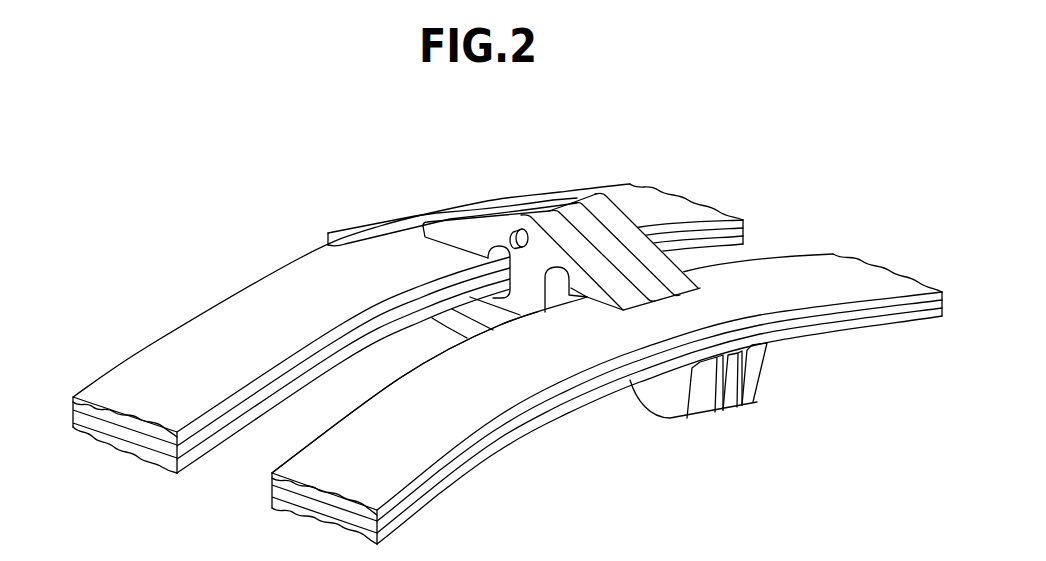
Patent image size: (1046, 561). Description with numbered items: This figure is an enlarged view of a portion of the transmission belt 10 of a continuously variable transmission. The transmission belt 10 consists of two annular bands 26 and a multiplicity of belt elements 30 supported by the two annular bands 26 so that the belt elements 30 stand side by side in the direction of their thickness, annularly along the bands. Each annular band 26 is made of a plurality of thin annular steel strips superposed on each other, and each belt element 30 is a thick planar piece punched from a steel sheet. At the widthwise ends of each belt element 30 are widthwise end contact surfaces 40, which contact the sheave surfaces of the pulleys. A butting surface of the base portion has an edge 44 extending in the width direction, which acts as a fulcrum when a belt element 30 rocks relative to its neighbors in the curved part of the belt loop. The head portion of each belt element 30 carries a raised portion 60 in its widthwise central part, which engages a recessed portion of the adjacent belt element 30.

The transmission belt 10 is at (524, 293).
The annular band 26 is at (195, 328).
The belt element 30 is at (548, 220).
The widthwise end contact surface 40 is at (700, 402).
The edge 44 is at (663, 383).
The raised portion 60 is at (508, 235).